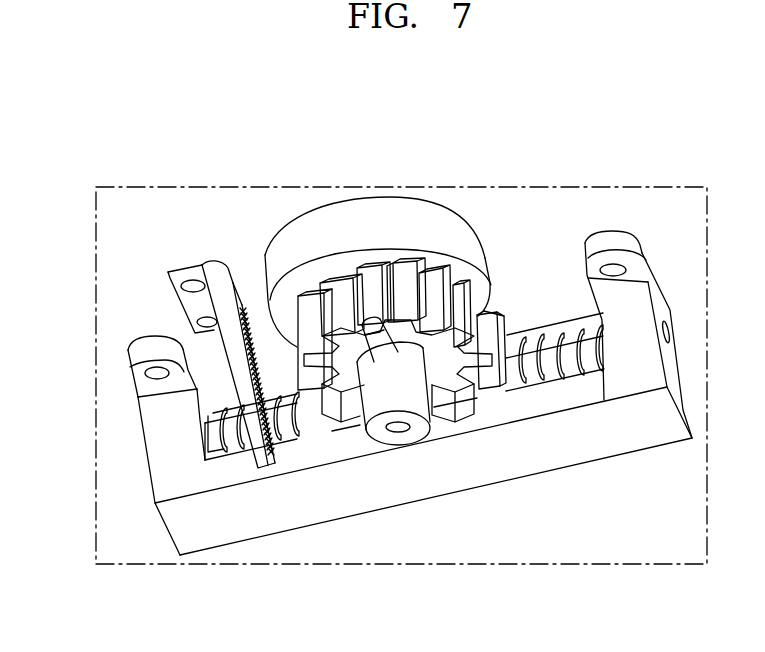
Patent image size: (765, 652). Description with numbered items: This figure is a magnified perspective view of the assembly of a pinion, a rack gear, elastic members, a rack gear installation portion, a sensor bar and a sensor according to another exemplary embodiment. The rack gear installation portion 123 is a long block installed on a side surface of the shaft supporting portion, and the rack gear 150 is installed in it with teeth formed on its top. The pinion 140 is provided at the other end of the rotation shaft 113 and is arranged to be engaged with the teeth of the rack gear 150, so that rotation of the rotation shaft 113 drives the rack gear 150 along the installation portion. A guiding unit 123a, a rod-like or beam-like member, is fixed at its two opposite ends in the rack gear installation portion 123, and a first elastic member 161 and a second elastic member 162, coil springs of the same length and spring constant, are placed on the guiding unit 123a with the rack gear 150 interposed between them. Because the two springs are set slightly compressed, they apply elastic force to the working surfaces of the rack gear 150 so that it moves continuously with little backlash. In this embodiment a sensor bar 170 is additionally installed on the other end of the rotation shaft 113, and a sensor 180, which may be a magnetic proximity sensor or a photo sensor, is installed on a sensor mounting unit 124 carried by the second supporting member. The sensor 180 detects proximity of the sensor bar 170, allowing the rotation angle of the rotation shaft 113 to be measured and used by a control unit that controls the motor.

The rotation shaft 113 is at (423, 422).
The rack gear installation portion 123 is at (163, 450).
The guiding unit 123a is at (220, 413).
The sensor mounting unit 124 is at (220, 287).
The pinion 140 is at (408, 282).
The rack gear 150 is at (337, 423).
The first elastic member 161 is at (287, 447).
The second elastic member 162 is at (558, 327).
The sensor bar 170 is at (382, 370).
The sensor 180 is at (250, 327).